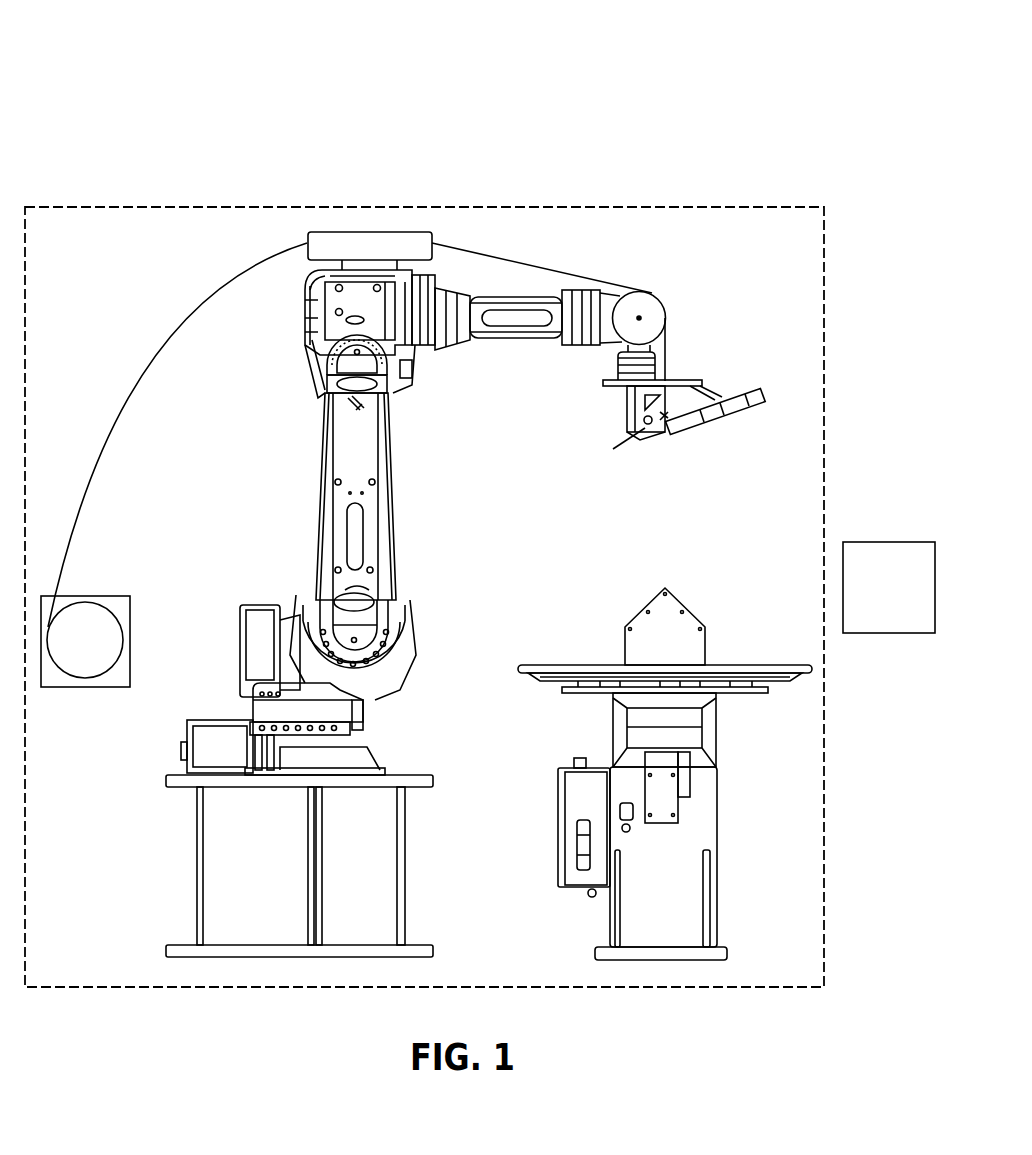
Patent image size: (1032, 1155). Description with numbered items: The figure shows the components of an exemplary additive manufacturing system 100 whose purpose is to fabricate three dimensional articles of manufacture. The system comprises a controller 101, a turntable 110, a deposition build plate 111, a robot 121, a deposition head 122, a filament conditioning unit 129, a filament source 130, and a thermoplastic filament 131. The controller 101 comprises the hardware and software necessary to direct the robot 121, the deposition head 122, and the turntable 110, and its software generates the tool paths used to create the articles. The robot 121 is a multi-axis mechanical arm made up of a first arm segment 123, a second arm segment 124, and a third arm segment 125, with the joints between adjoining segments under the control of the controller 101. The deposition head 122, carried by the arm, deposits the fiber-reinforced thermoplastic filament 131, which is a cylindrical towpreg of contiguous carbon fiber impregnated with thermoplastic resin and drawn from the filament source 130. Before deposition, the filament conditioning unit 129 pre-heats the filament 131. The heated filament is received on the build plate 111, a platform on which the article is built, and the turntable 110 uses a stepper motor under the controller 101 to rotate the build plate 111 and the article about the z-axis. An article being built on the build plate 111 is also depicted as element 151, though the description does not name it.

The additive manufacturing system 100 is at (142, 86).
The controller 101 is at (893, 541).
The turntable 110 is at (728, 822).
The deposition build plate 111 is at (550, 665).
The robot 121 is at (186, 206).
The deposition head 122 is at (604, 408).
The first arm segment 123 is at (618, 372).
The second arm segment 124 is at (490, 338).
The third arm segment 125 is at (320, 500).
The filament conditioning unit 129 is at (308, 245).
The filament source 130 is at (130, 572).
The thermoplastic filament 131 is at (585, 276).
The workpiece 151 is at (643, 612).